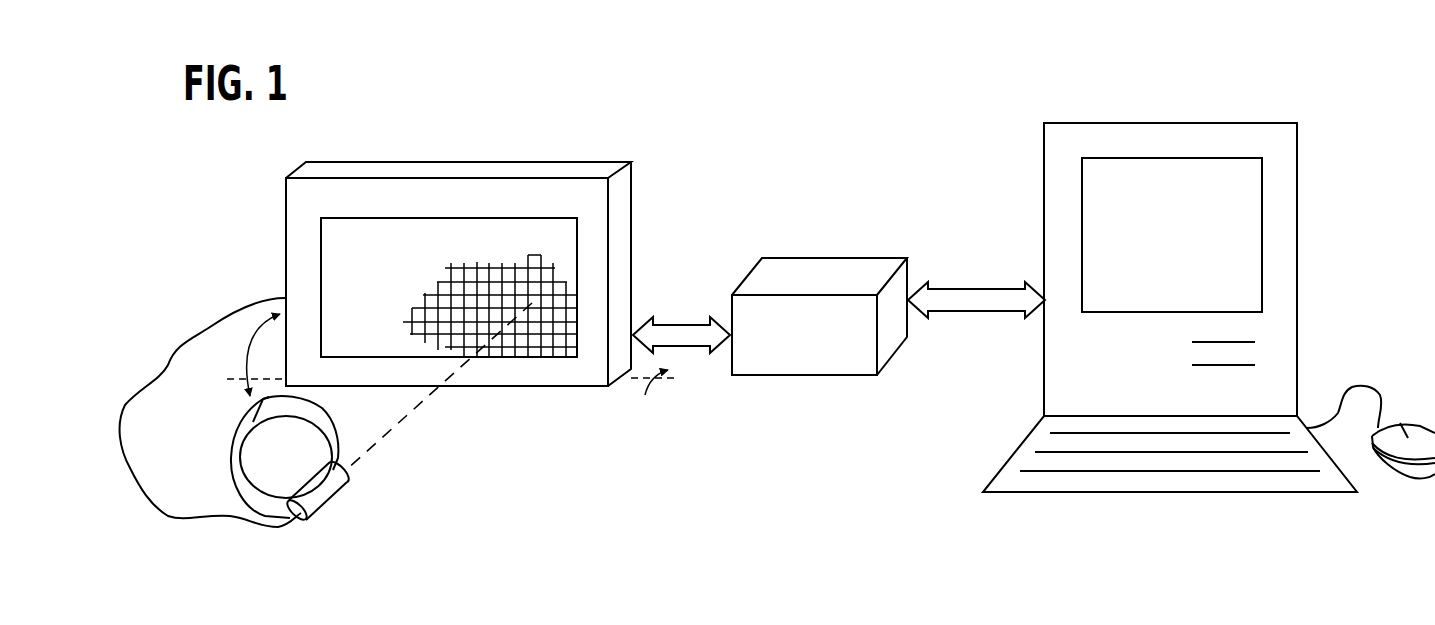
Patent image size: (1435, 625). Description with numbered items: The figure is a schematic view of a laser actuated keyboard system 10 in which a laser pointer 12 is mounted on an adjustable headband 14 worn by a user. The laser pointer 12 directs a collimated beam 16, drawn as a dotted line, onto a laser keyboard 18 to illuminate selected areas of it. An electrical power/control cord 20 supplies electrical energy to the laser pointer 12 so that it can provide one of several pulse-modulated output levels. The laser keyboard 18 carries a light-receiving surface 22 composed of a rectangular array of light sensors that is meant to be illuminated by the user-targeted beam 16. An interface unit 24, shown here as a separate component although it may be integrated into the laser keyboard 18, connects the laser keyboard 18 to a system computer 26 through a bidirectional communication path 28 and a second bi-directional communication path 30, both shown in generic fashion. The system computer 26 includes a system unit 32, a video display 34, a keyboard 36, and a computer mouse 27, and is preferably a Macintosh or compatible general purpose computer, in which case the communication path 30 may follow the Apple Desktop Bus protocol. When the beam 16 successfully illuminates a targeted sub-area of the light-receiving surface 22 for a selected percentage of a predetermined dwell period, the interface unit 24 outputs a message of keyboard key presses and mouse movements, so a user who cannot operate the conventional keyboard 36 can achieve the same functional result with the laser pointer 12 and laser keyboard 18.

The laser actuated keyboard system 10 is at (809, 148).
The laser pointer 12 is at (336, 498).
The adjustable headband 14 is at (235, 440).
The collimated beam 16 is at (423, 405).
The laser keyboard 18 is at (563, 158).
The electrical power/control cord 20 is at (179, 343).
The light-receiving surface 22 is at (390, 266).
The interface unit 24 is at (872, 257).
The system computer 26 is at (1170, 321).
The mouse 27 is at (1418, 497).
The bidirectional communication path 28 is at (683, 323).
The bi-directional communication path 30 is at (978, 287).
The system unit 32 is at (1125, 377).
The video display 34 is at (1185, 247).
The keyboard 36 is at (1063, 493).